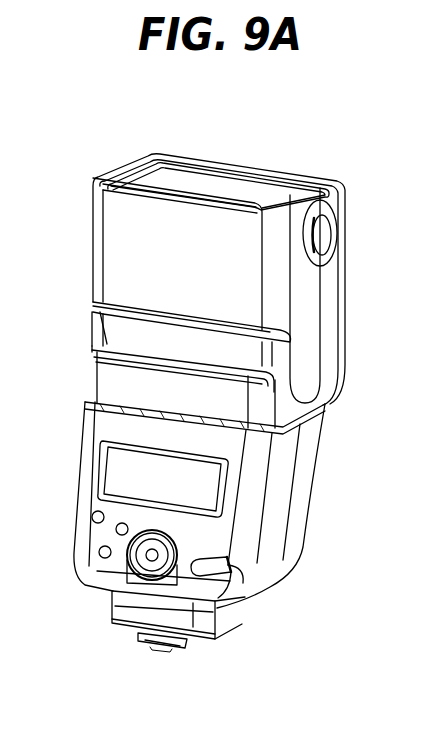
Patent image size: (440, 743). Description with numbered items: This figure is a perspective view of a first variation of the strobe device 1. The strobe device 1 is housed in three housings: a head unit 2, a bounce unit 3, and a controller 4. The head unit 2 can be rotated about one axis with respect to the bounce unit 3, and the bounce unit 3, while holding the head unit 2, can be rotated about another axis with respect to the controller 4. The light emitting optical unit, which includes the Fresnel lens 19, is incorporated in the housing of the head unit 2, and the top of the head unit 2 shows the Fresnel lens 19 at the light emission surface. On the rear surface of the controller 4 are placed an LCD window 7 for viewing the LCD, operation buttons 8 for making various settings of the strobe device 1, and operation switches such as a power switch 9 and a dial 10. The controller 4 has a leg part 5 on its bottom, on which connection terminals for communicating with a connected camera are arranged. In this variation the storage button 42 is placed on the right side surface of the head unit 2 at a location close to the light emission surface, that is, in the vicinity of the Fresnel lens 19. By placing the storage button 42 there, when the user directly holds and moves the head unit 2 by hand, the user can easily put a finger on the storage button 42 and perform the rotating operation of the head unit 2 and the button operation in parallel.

The strobe device 1 is at (97, 569).
The head unit 2 is at (102, 247).
The bounce unit 3 is at (93, 371).
The controller 4 is at (302, 483).
The leg part 5 is at (155, 638).
The LCD window 7 is at (113, 457).
The operation buttons 8 is at (98, 529).
The power switch 9 is at (213, 568).
The dial 10 is at (152, 556).
The Fresnel lens 19 is at (221, 172).
The storage button 42 is at (327, 233).